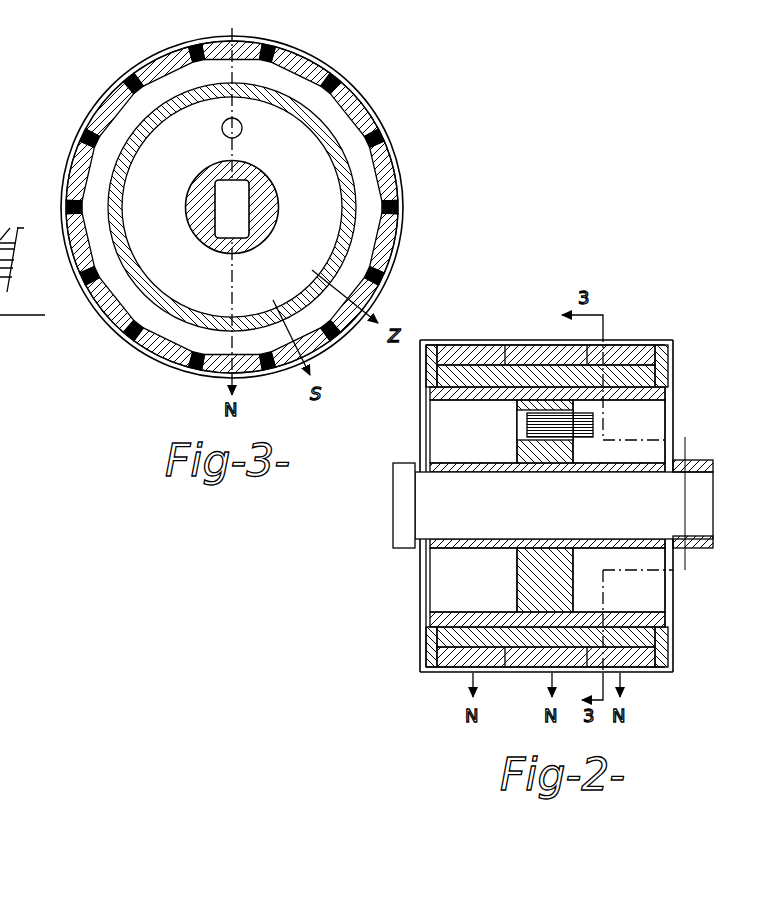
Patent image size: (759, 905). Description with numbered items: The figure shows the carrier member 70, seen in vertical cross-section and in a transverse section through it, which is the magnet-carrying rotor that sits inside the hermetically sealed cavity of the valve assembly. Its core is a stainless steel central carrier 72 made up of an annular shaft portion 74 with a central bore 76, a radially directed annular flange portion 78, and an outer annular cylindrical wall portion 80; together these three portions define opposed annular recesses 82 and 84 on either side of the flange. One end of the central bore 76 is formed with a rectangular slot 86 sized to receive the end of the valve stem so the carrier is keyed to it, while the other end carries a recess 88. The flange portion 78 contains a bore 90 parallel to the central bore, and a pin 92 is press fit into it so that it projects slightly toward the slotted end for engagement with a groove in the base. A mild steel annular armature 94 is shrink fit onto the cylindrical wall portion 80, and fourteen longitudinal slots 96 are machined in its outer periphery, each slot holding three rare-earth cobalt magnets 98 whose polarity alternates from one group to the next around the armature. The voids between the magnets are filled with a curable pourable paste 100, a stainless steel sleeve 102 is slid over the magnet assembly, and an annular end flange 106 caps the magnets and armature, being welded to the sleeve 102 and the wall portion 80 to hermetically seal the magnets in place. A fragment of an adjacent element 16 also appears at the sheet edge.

In FIG. 3, the adjacent figure element 16 is at (6, 230).
In FIG. 3, the carrier member 70 is at (392, 122).
In FIG. 2, the carrier member 70 is at (414, 622).
In FIG. 2, the central carrier 72 is at (453, 452).
In FIG. 3, the annular shaft portion 74 is at (270, 186).
In FIG. 2, the annular shaft portion 74 is at (477, 472).
In FIG. 2, the central bore 76 is at (596, 466).
In FIG. 2, the annular flange portion 78 is at (517, 574).
In FIG. 3, the outer annular cylindrical wall portion 80 is at (121, 200).
In FIG. 2, the outer annular cylindrical wall portion 80 is at (450, 613).
In FIG. 2, the annular recess 82 is at (473, 506).
In FIG. 2, the annular recess 84 is at (619, 506).
In FIG. 3, the rectangular slot 86 is at (249, 228).
In FIG. 2, the rectangular slot 86 is at (703, 482).
In FIG. 2, the recess 88 is at (393, 490).
In FIG. 2, the bore 90 is at (527, 426).
In FIG. 3, the pin 92 is at (243, 128).
In FIG. 2, the pin 92 is at (541, 428).
In FIG. 3, the annular armature 94 is at (392, 160).
In FIG. 2, the annular armature 94 is at (640, 642).
In FIG. 3, the slots 96 is at (100, 272).
In FIG. 3, the rare-earth cobalt magnets 98 is at (384, 237).
In FIG. 2, the rare-earth cobalt magnets 98 is at (487, 672).
In FIG. 3, the curable pourable paste 100 is at (134, 86).
In FIG. 3, the stainless steel sleeve 102 is at (366, 99).
In FIG. 2, the stainless steel sleeve 102 is at (483, 340).
In FIG. 2, the annular end flange 106 is at (424, 368).